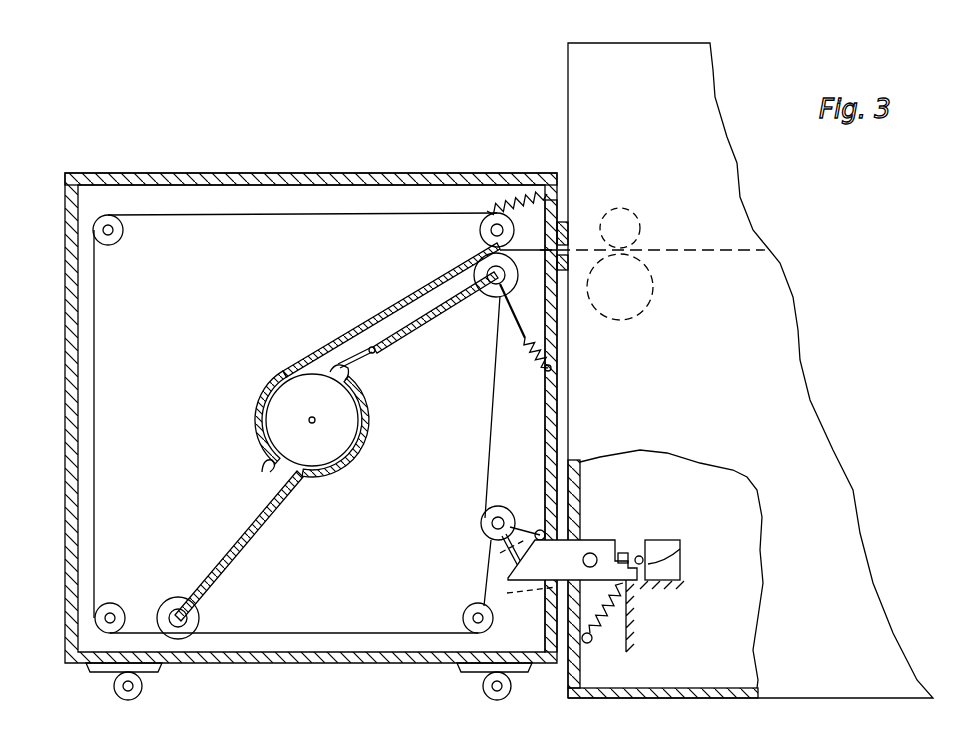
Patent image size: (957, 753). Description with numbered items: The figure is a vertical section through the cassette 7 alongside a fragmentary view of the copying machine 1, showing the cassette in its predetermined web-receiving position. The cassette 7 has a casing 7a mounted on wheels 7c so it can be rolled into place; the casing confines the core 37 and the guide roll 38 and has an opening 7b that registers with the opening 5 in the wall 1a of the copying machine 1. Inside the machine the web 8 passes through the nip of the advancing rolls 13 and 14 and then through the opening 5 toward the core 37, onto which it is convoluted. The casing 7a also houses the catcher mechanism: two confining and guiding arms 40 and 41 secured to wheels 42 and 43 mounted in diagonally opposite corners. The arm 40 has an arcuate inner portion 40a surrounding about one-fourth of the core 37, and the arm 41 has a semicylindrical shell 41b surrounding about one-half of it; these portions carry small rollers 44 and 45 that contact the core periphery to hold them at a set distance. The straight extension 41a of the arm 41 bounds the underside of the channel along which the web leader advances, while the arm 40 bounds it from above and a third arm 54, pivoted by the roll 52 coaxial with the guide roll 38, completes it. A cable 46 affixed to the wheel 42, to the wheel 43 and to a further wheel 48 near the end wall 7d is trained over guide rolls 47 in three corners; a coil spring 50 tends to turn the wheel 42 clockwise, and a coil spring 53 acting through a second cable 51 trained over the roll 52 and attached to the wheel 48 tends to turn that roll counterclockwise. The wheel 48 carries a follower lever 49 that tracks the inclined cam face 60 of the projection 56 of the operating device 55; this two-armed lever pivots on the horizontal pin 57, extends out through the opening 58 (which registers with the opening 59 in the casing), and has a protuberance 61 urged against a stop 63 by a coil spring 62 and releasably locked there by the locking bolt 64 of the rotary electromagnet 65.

The copying machine 1 is at (590, 151).
The wall 1a is at (572, 676).
The opening 5 is at (573, 240).
The cassette 7 is at (294, 165).
The casing 7a is at (420, 178).
The opening 7b is at (508, 275).
The wheels 7c is at (145, 686).
The end wall 7d is at (556, 394).
The web 8 is at (528, 236).
The lower advancing roll 13 is at (648, 300).
The advancing roll 14 is at (641, 233).
The core 37 is at (300, 383).
The guide roll 38 is at (485, 290).
The arm 40 is at (372, 318).
The arcuate inner portion 40a is at (258, 402).
The arm 41 is at (295, 508).
The straight extension 41a is at (374, 354).
The semicylindrical inner portion 41b is at (352, 452).
The wheel 42 is at (480, 232).
The wheel 43 is at (187, 597).
The roller 44 is at (268, 473).
The roller 45 is at (351, 374).
The cable 46 is at (300, 214).
The guide rolls 47 is at (123, 233).
The wheel 48 is at (488, 514).
The lever 49 is at (538, 529).
The coil spring 50 is at (515, 195).
The cable 51 is at (486, 402).
The roll 52 is at (506, 295).
The coil spring 53 is at (530, 360).
The arm 54 is at (410, 322).
The operating device 55 is at (612, 535).
The projection 56 is at (592, 552).
The pin 57 is at (623, 552).
The opening 58 is at (628, 600).
The opening 59 is at (548, 600).
The cam face 60 is at (505, 548).
The protuberance 61 is at (641, 556).
The coil spring 62 is at (603, 605).
The stop 63 is at (660, 584).
The locking bolt 64 is at (682, 545).
The rotary electromagnet 65 is at (681, 560).